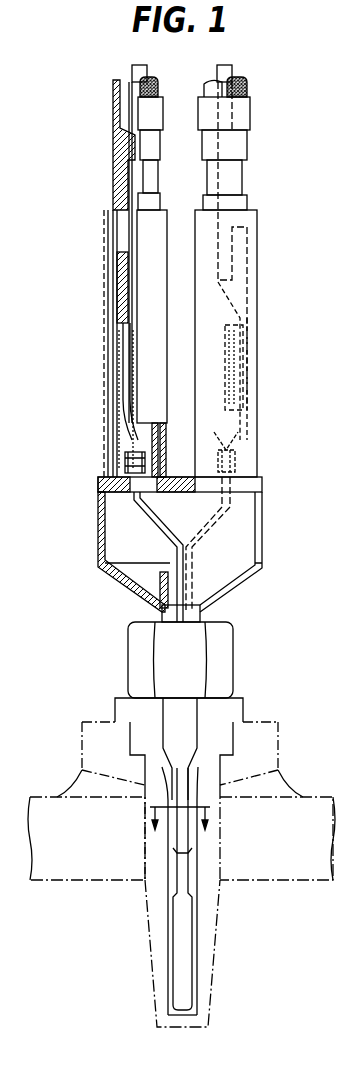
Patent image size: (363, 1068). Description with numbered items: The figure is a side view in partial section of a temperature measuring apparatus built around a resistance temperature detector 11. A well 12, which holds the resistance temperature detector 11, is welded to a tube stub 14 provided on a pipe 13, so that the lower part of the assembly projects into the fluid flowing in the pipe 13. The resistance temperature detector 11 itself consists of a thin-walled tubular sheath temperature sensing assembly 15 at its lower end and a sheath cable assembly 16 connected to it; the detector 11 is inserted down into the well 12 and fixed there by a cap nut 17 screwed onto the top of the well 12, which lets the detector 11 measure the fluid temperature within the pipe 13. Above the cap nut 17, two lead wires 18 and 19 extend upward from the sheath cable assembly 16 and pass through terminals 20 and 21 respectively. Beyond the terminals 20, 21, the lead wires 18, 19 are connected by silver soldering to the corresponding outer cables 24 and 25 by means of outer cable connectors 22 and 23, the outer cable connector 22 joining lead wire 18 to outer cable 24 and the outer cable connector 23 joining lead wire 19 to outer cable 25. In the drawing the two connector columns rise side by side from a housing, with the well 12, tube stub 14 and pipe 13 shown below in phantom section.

The resistance temperature detector 11 is at (203, 897).
The well 12 is at (244, 700).
The pipe 13 is at (318, 800).
The tube stub 14 is at (270, 727).
The thin-walled tubular sheath temperature sensing assembly 15 is at (190, 947).
The sheath cable assembly 16 is at (170, 849).
The cap nut 17 is at (233, 645).
The lead wire 18 is at (140, 516).
The lead wire 19 is at (218, 518).
The terminal 20 is at (125, 463).
The terminal 21 is at (235, 457).
The outer cable connector 22 is at (123, 348).
The outer cable connector 23 is at (247, 335).
The outer cable 24 is at (137, 232).
The outer cable 25 is at (232, 226).